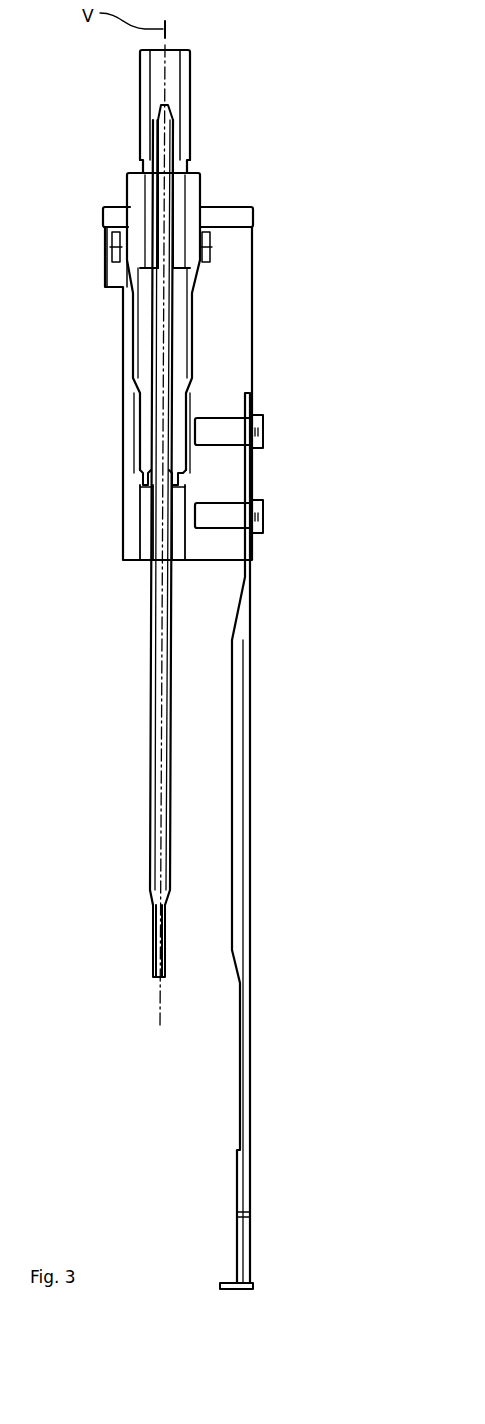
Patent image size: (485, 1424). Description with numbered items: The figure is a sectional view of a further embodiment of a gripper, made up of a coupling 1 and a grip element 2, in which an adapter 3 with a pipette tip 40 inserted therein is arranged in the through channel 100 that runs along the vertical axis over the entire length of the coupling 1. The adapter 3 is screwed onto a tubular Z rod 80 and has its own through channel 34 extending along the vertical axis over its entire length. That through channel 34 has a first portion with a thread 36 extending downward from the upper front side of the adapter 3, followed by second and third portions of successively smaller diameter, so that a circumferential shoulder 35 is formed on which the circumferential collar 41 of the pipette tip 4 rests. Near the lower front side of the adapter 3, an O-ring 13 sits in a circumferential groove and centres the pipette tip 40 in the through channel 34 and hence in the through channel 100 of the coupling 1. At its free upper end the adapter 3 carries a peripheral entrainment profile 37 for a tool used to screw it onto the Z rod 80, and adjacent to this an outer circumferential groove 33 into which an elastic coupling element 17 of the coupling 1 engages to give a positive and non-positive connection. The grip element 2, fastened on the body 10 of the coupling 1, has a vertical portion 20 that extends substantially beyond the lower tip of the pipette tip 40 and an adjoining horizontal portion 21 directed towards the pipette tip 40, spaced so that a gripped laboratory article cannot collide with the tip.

The coupling 1 is at (344, 237).
The grip element 2 is at (322, 740).
The adapter 3 is at (132, 190).
The pipette tip 4 is at (332, 108).
The body 10 is at (220, 348).
The O-ring 13 is at (147, 473).
The elastic coupling element 17 is at (107, 242).
The vertical portion 20 is at (243, 887).
The horizontal portion 21 is at (222, 1282).
The circumferential groove 33 is at (196, 248).
The through channel 34 is at (155, 348).
The circumferential shoulder 35 is at (208, 273).
The thread 36 is at (188, 190).
The entrainment profile 37 is at (201, 182).
The pipette tip 40 is at (150, 773).
The circumferential collar 41 is at (118, 262).
The Z rod 80 is at (140, 97).
The through channel 100 is at (145, 557).